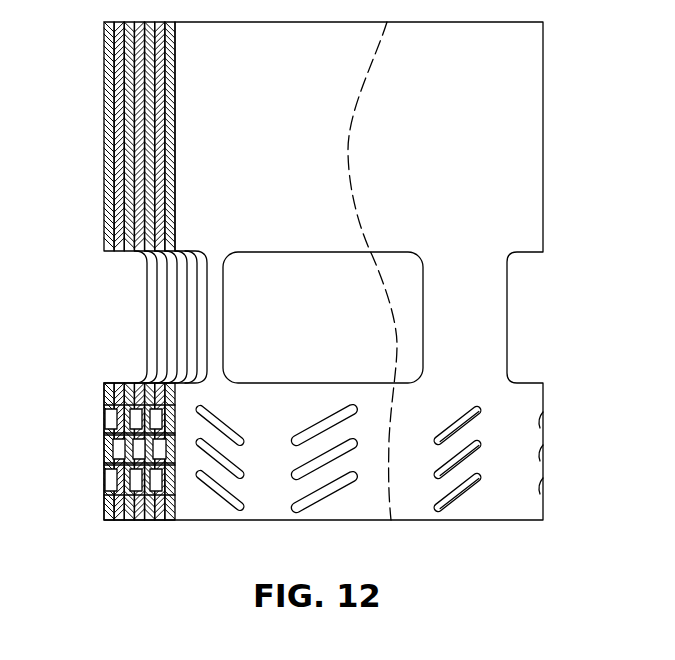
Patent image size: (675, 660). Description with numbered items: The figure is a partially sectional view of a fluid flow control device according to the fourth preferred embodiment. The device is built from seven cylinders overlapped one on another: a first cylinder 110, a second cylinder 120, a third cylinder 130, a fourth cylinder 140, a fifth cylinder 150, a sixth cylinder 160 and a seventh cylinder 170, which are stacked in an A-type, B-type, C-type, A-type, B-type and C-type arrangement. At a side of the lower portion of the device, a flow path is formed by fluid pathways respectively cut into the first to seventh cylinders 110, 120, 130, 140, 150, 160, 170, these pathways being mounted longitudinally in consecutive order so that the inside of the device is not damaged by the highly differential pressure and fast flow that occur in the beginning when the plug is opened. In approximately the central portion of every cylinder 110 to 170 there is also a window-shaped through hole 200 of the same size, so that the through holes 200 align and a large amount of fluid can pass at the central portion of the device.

The first cylinder 110 is at (169, 210).
The second cylinder 120 is at (166, 183).
The third cylinder 130 is at (148, 150).
The fourth cylinder 140 is at (140, 120).
The fifth cylinder 150 is at (130, 88).
The sixth cylinder 160 is at (120, 59).
The seventh cylinder 170 is at (112, 30).
The window-shaped through hole 200 is at (372, 312).